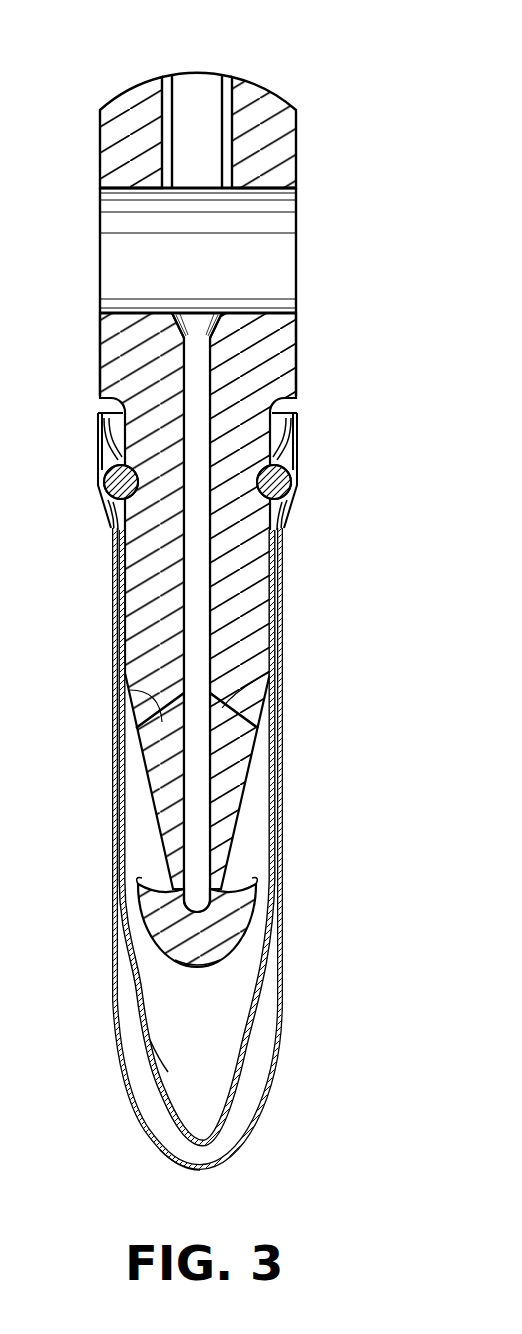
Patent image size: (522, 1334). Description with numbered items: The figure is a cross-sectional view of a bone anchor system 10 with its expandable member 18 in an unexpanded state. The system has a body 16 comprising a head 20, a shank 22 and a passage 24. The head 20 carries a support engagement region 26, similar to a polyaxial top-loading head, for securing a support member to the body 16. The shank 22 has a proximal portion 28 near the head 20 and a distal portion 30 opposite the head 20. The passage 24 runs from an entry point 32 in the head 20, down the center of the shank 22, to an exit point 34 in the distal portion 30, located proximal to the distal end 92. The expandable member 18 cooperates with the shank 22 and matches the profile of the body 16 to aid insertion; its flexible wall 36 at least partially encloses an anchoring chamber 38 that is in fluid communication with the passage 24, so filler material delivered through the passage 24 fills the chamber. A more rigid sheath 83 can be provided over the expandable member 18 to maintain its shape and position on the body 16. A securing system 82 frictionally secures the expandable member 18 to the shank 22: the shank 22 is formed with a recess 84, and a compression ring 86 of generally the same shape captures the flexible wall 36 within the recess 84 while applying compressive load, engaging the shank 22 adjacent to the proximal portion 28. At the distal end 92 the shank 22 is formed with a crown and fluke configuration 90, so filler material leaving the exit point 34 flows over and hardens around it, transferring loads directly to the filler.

The bone anchor system 10 is at (404, 118).
The body 16 is at (295, 109).
The expandable member 18 is at (259, 1032).
The head 20 is at (115, 104).
The shank 22 is at (138, 600).
The passage 24 is at (200, 598).
The support engagement region 26 is at (258, 192).
The proximal portion 28 is at (293, 428).
The distal portion 30 is at (254, 912).
The entry point 32 is at (190, 80).
The exit point 34 is at (132, 690).
The flexible wall 36 is at (272, 970).
The anchoring chamber 38 is at (166, 1044).
The securing system 82 is at (313, 497).
The sheath 83 is at (162, 1150).
The recess 84 is at (114, 527).
The compression ring 86 is at (104, 480).
The crown and fluke configuration 90 is at (157, 930).
The distal end 92 is at (197, 967).